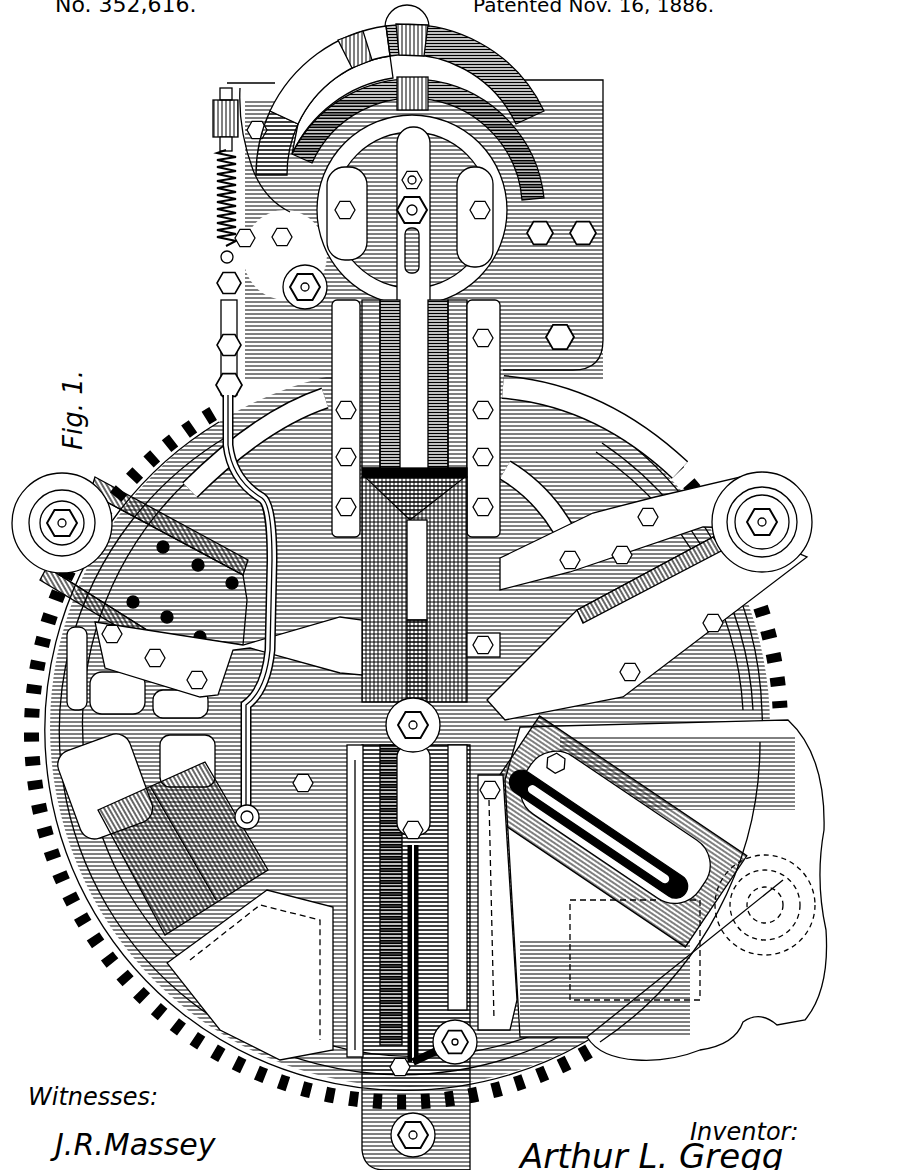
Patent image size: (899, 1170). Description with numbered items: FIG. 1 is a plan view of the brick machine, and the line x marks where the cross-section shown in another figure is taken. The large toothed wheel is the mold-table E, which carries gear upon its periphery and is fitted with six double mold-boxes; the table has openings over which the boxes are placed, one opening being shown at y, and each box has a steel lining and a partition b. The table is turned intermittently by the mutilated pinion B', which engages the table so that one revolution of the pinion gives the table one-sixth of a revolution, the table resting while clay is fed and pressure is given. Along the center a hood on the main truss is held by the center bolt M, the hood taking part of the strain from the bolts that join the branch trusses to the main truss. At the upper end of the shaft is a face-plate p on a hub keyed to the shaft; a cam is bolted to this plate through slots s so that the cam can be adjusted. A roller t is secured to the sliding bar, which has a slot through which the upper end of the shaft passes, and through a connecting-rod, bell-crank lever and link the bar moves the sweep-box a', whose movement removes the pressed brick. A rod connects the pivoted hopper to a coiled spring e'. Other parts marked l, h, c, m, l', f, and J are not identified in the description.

The section line x is at (820, 727).
The mold-table E is at (622, 432).
The mutilated pinion B' is at (400, 90).
The slots s is at (305, 128).
The face-plate p is at (470, 180).
The central slide bar l is at (404, 405).
The roller t is at (404, 174).
The side plate h is at (365, 398).
The center bolt M is at (478, 1000).
The opening y is at (402, 903).
The connecting rod c is at (450, 955).
The crank hub m is at (405, 705).
The partition b is at (668, 624).
The sweep-box a' is at (497, 902).
The connecting rod with turnbuckle l' is at (252, 564).
The coiled spring e' is at (219, 190).
The latch lever f is at (275, 272).
The right lever arm J is at (592, 658).